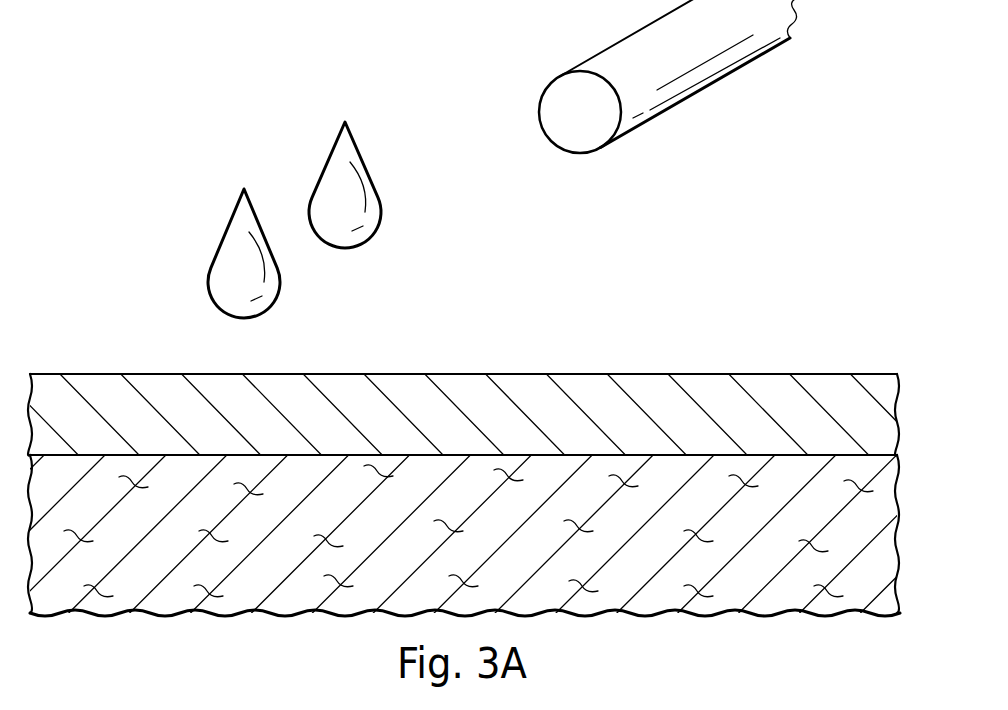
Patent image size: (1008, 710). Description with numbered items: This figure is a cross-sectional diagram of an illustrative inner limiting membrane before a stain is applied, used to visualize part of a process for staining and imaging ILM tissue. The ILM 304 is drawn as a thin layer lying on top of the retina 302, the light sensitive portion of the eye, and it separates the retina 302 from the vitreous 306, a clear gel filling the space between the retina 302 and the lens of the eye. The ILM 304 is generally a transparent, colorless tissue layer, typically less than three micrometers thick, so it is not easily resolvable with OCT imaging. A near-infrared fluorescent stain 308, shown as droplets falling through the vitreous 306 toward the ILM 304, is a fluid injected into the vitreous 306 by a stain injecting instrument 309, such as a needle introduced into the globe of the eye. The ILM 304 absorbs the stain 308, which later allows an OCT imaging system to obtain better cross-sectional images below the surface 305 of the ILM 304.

The retina 302 is at (228, 603).
The inner limiting membrane 304 is at (93, 383).
The surface of the ILM 305 is at (817, 375).
The vitreous 306 is at (130, 138).
The near-infrared fluorescent stain 308 is at (377, 125).
The stain injecting instrument 309 is at (688, 97).